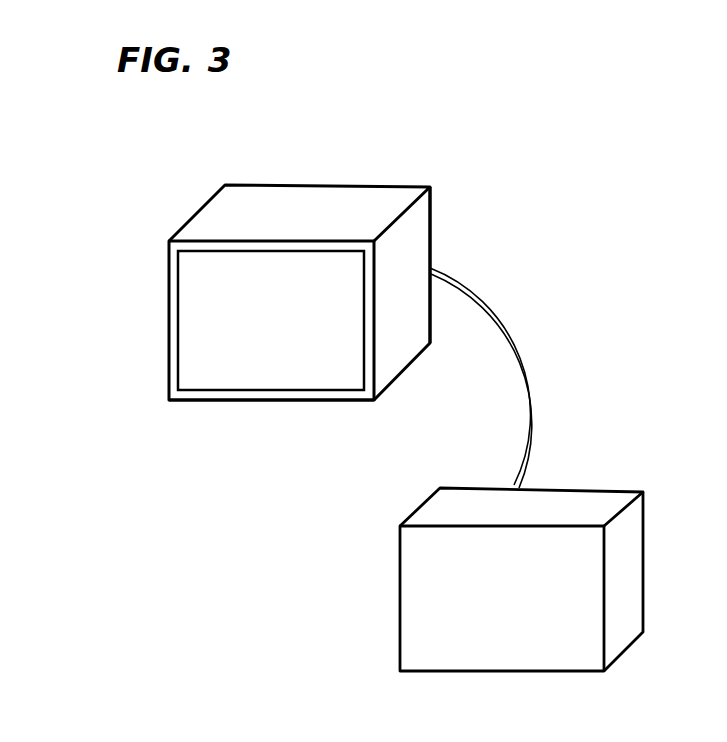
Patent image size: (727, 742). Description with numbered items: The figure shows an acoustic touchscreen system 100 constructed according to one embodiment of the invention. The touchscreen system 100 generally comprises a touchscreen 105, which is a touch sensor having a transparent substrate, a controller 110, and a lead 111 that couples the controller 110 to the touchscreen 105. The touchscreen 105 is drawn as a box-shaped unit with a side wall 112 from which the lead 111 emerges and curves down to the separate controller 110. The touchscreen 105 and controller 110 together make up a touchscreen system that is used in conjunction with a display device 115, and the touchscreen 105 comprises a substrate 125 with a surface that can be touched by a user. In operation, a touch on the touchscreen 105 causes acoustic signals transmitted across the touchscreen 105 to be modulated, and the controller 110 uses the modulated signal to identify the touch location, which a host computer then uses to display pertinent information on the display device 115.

The touchscreen system 100 is at (72, 189).
The touchscreen 105 is at (178, 349).
The controller 110 is at (605, 487).
The lead 111 is at (528, 370).
The side wall of housing 112 is at (432, 228).
The display device 115 is at (220, 402).
The substrate 125 is at (310, 376).